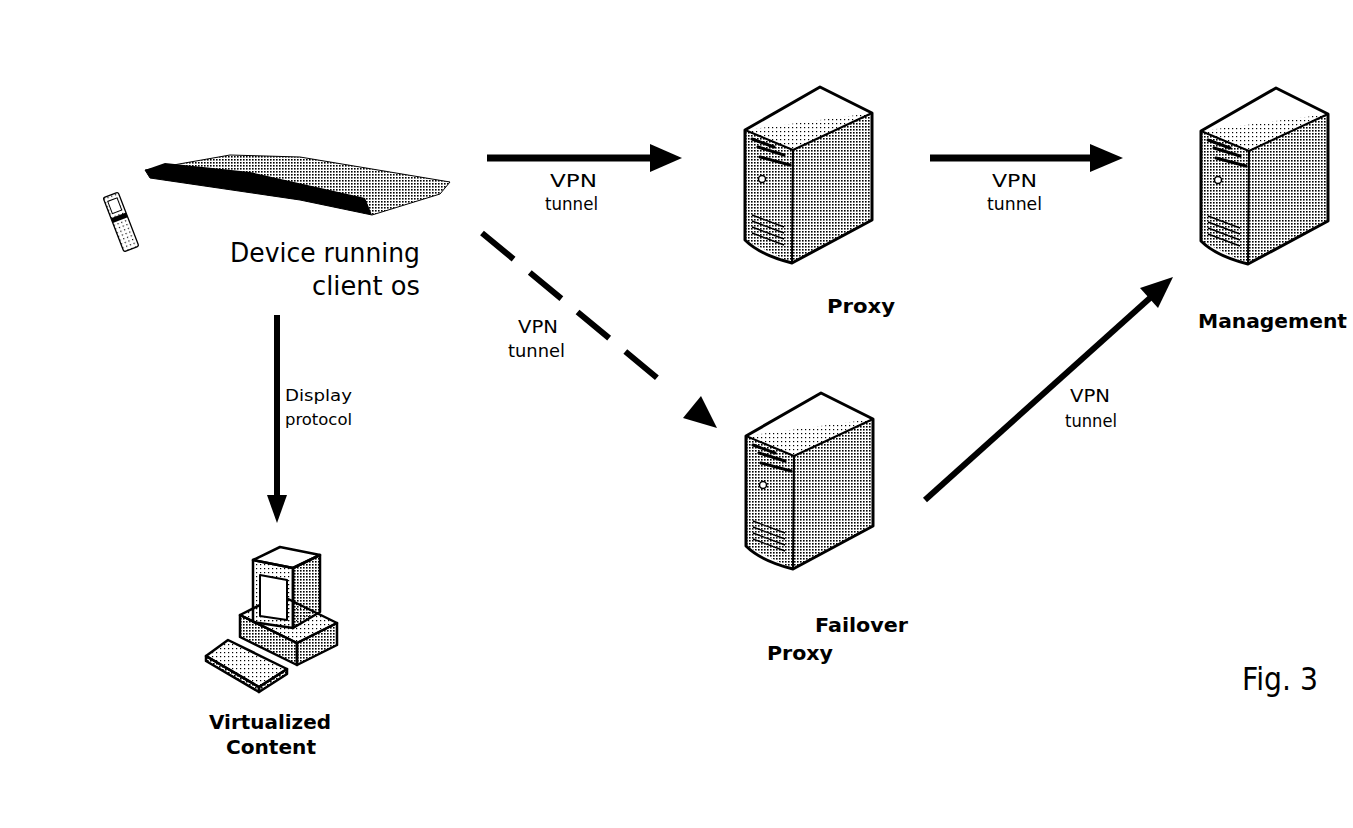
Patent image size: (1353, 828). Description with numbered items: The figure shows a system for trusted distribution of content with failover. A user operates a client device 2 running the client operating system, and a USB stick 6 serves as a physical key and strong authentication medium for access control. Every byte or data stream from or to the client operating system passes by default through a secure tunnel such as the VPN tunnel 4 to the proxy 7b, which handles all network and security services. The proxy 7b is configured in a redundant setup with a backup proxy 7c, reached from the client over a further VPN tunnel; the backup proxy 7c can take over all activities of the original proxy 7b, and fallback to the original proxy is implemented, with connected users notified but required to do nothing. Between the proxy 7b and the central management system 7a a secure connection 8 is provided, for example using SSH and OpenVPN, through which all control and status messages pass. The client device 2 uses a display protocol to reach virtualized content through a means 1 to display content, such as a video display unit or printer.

The means to display content 1 is at (301, 622).
The client device 2 is at (298, 172).
The VPN tunnel 4 is at (584, 138).
The USB stick 6 is at (113, 223).
The central management system 7a is at (1264, 238).
The proxy 7b is at (808, 203).
The backup proxy 7c is at (798, 510).
The secure connection 8 is at (1026, 138).